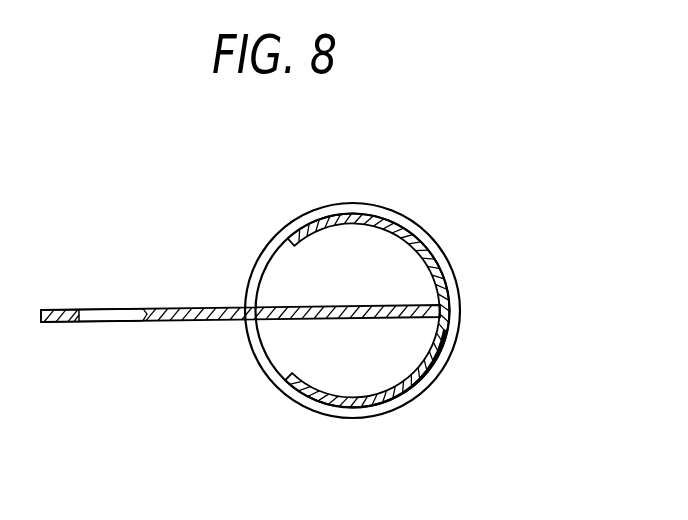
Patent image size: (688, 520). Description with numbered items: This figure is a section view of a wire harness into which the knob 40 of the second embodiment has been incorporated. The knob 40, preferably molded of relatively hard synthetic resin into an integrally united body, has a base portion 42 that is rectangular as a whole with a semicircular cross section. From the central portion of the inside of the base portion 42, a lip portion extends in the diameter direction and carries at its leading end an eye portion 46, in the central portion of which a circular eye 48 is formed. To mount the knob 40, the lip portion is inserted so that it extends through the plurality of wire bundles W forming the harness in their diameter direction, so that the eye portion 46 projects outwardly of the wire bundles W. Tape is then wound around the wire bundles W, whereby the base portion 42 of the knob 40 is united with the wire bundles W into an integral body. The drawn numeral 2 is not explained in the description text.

The tube 2 is at (462, 287).
The wire bundles W is at (397, 257).
The base portion 42 is at (448, 368).
The knob 40 is at (240, 355).
The eye portion 46 is at (53, 323).
The circular eye 48 is at (90, 308).